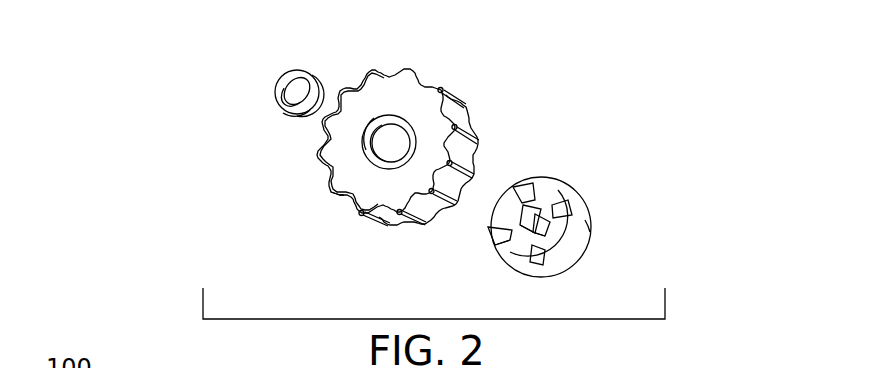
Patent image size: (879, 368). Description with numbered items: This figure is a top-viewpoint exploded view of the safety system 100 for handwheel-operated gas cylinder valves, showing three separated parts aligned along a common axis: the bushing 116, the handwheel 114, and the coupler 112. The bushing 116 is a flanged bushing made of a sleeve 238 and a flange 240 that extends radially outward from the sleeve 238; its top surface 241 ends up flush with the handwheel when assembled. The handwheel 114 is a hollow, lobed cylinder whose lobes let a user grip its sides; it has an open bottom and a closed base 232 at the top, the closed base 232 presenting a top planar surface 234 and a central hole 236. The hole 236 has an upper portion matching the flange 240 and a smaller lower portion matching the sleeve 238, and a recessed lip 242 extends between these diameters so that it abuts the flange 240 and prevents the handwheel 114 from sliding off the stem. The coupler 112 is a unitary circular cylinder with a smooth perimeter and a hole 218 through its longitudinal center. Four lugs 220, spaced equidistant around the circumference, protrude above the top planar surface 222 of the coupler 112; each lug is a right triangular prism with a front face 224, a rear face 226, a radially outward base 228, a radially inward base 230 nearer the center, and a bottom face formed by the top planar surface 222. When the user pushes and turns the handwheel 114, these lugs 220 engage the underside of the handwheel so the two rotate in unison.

The safety system 100 is at (172, 70).
The flange 240 is at (293, 69).
The top surface 241 is at (270, 90).
The bushing 116 is at (282, 113).
The sleeve 238 is at (313, 120).
The closed base 232 is at (347, 143).
The handwheel 114 is at (391, 98).
The recessed lip 242 is at (397, 116).
The hole 236 is at (393, 148).
The top planar surface 234 is at (354, 197).
The hole 218 is at (590, 232).
The coupler 112 is at (585, 220).
The lugs 220 is at (523, 184).
The radially outward base 228 is at (580, 187).
The rear face 226 is at (493, 224).
The front face 224 is at (492, 253).
The top planar surface 222 is at (582, 241).
The radially inward base 230 is at (530, 172).